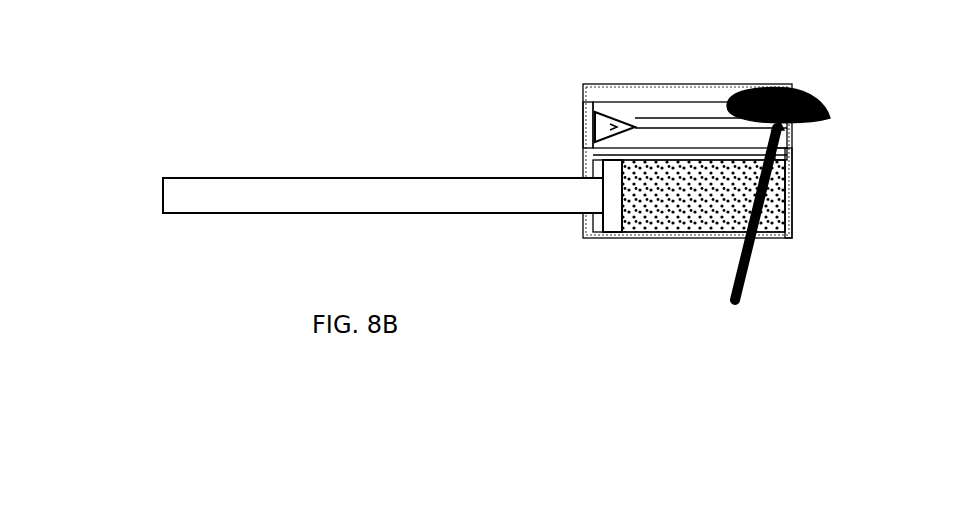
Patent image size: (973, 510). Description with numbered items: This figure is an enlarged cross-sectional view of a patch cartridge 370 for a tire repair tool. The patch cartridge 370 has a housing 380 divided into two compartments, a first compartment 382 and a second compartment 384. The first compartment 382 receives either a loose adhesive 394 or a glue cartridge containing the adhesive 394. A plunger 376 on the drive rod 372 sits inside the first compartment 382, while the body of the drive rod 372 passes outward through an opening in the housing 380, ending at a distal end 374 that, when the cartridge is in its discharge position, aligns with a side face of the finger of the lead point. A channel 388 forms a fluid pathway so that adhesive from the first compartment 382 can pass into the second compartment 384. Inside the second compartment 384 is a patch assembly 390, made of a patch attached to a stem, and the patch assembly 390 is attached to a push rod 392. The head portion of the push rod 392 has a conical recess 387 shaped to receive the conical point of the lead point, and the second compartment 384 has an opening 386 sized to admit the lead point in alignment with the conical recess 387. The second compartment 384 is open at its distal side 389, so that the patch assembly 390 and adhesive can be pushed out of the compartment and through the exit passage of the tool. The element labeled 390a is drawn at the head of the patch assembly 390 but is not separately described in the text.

The patch cartridge 370 is at (380, 90).
The drive rod 372 is at (418, 213).
The distal end of the push rod 374 is at (165, 195).
The plunger 376 is at (613, 222).
The housing 380 is at (597, 238).
The first compartment 382 is at (660, 228).
The second compartment 384 is at (626, 101).
The opening 386 is at (583, 115).
The conical recess 387 is at (583, 135).
The channel 388 is at (790, 165).
The distal side 389 is at (788, 142).
The patch assembly 390 is at (815, 128).
The actuator head 390a is at (815, 100).
The push rod 392 is at (705, 118).
The adhesive 394 is at (786, 222).